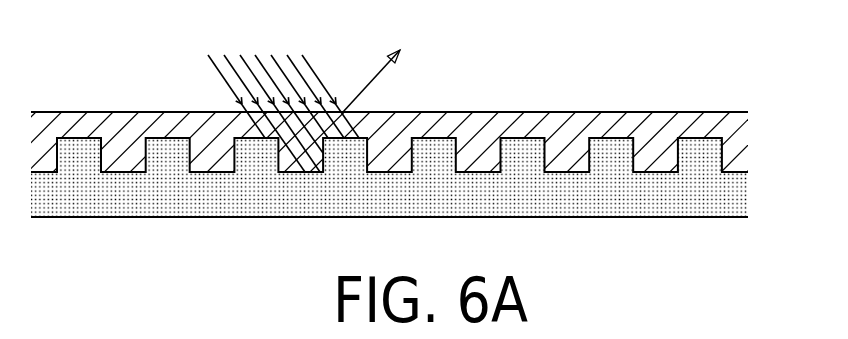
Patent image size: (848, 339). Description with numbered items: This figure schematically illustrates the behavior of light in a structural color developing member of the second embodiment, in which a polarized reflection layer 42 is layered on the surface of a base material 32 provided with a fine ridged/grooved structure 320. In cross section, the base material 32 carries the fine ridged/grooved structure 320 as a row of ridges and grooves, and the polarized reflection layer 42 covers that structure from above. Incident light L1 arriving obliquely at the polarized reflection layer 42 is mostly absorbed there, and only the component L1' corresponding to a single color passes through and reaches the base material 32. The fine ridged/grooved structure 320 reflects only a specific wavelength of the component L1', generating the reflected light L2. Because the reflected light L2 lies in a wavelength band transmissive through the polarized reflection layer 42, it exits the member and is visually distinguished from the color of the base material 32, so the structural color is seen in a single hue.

The polarized reflection layer 42 is at (727, 120).
The base material 32 is at (737, 197).
The fine ridged/grooved structure 320 is at (742, 162).
The incident light L1 is at (275, 64).
The reflected light L2 is at (370, 84).
The component corresponding to the single color L1' is at (301, 185).